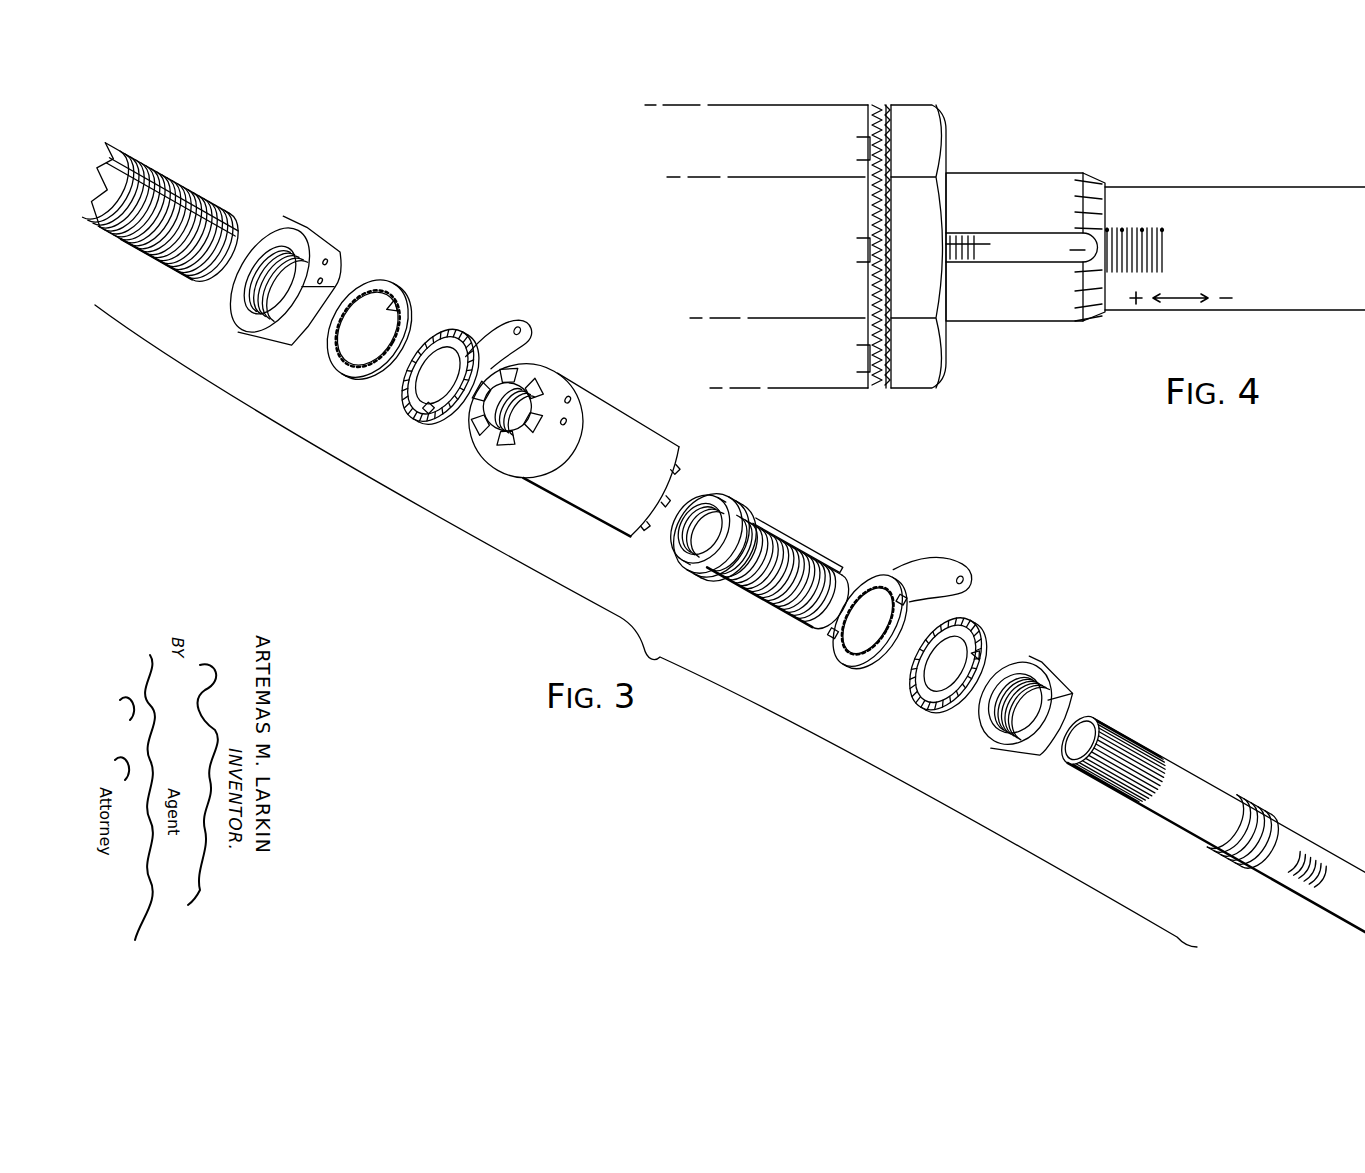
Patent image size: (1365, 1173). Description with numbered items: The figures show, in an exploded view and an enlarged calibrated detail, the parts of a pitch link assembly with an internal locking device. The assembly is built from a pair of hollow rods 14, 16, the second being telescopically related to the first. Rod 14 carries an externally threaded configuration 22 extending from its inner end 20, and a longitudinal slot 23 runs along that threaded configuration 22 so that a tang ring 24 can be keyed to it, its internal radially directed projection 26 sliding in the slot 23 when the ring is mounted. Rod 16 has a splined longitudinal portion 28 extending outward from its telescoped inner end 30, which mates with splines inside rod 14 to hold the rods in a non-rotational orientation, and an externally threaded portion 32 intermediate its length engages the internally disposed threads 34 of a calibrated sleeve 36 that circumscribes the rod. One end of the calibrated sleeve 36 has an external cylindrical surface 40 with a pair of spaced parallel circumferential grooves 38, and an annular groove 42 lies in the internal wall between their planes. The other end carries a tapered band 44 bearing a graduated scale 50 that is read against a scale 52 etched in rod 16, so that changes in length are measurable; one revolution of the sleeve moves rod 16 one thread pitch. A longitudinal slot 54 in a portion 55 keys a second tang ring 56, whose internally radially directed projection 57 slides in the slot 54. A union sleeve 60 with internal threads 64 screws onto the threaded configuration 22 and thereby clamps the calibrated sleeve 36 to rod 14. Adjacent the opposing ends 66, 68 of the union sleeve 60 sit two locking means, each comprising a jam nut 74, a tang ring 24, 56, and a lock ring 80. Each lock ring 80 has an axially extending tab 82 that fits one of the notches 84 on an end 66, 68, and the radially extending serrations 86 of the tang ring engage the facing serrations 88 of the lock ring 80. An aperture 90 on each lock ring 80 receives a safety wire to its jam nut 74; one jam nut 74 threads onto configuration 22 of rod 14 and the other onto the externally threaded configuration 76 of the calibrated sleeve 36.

In FIG. 3, the hollow rod 14 is at (130, 158).
In FIG. 3, the hollow rod 16 is at (1194, 772).
In FIG. 4, the hollow rod 16 is at (1254, 188).
In FIG. 3, the inner end 20 is at (232, 212).
In FIG. 3, the externally threaded configuration 22 is at (198, 184).
In FIG. 3, the longitudinal slot 23 is at (172, 180).
In FIG. 3, the tang ring 24 is at (336, 378).
In FIG. 3, the internal radially directed projection 26 is at (385, 302).
In FIG. 3, the splined longitudinal portion 28 is at (1142, 742).
In FIG. 3, the telescoped inner end 30 is at (1082, 718).
In FIG. 3, the externally threaded portion 32 is at (1246, 800).
In FIG. 3, the internally disposed threads 34 is at (720, 494).
In FIG. 3, the calibrated sleeve 36 is at (742, 592).
In FIG. 3, the circumferential grooves 38 is at (716, 570).
In FIG. 3, the external cylindrical surface 40 is at (762, 512).
In FIG. 3, the annular groove 42 is at (692, 532).
In FIG. 3, the tapered band 44 is at (818, 620).
In FIG. 4, the tapered band 44 is at (1098, 180).
In FIG. 4, the graduated scale 50 is at (1038, 208).
In FIG. 3, the scale 52 is at (1314, 850).
In FIG. 4, the scale 52 is at (1164, 254).
In FIG. 3, the longitudinal slot 54 is at (828, 558).
In FIG. 4, the longitudinal slot 54 is at (1028, 262).
In FIG. 4, the portion 55 is at (1020, 174).
In FIG. 3, the tang ring 56 is at (994, 642).
In FIG. 3, the internally radially directed projection 57 is at (952, 654).
In FIG. 3, the union sleeve 60 is at (622, 424).
In FIG. 3, the internal threads 64 is at (472, 442).
In FIG. 3, the end 66 is at (480, 470).
In FIG. 3, the end 68 is at (676, 452).
In FIG. 3, the jam nut 74 is at (318, 230).
In FIG. 3, the externally threaded configuration 76 is at (792, 534).
In FIG. 3, the lock ring 80 is at (412, 418).
In FIG. 3, the tab 82 is at (513, 372).
In FIG. 3, the notches 84 is at (548, 382).
In FIG. 3, the radially extending serrations 86 is at (405, 297).
In FIG. 3, the facing serrations 88 is at (446, 326).
In FIG. 3, the aperture 90 is at (510, 320).